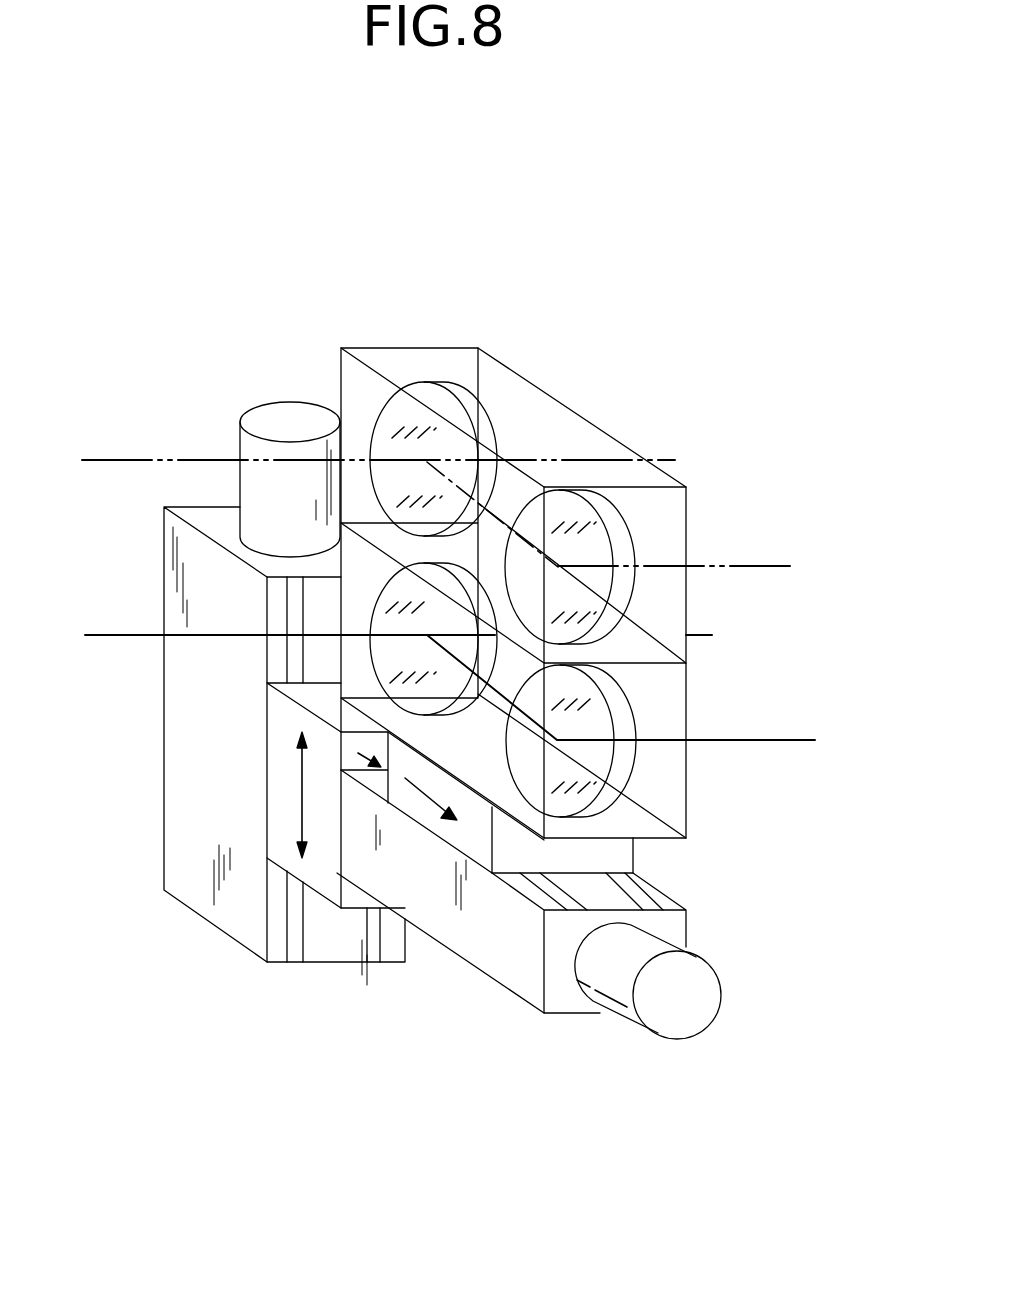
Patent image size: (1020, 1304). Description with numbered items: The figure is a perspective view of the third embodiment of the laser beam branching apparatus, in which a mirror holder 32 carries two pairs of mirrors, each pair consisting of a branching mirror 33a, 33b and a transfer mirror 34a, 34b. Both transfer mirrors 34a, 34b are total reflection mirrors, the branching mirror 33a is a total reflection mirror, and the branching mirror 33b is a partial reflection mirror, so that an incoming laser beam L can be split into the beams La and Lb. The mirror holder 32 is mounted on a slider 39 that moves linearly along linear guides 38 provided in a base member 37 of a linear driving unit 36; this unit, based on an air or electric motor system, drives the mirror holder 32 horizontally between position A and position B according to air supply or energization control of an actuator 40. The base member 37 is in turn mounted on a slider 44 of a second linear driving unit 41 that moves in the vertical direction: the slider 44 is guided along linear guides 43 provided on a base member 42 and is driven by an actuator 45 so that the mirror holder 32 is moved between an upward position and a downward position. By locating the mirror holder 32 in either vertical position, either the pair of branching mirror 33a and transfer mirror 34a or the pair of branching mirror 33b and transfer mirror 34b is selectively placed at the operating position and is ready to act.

The mirror holder 32 is at (667, 612).
The branching mirror 33a is at (390, 666).
The branching mirror 33b is at (440, 408).
The transfer mirror 34a is at (593, 723).
The transfer mirror 34b is at (588, 539).
The linear driving unit 36 is at (568, 1022).
The base member 37 is at (490, 943).
The linear guides 38 is at (643, 903).
The slider 39 is at (608, 853).
The actuator 40 is at (697, 992).
The linear driving unit 41 is at (207, 935).
The base member 42 is at (247, 912).
The linear guides 43 is at (377, 938).
The slider 44 is at (280, 812).
The actuator 45 is at (262, 486).
The light beam L is at (130, 635).
The light beam La is at (808, 594).
The light beam Lb is at (800, 740).